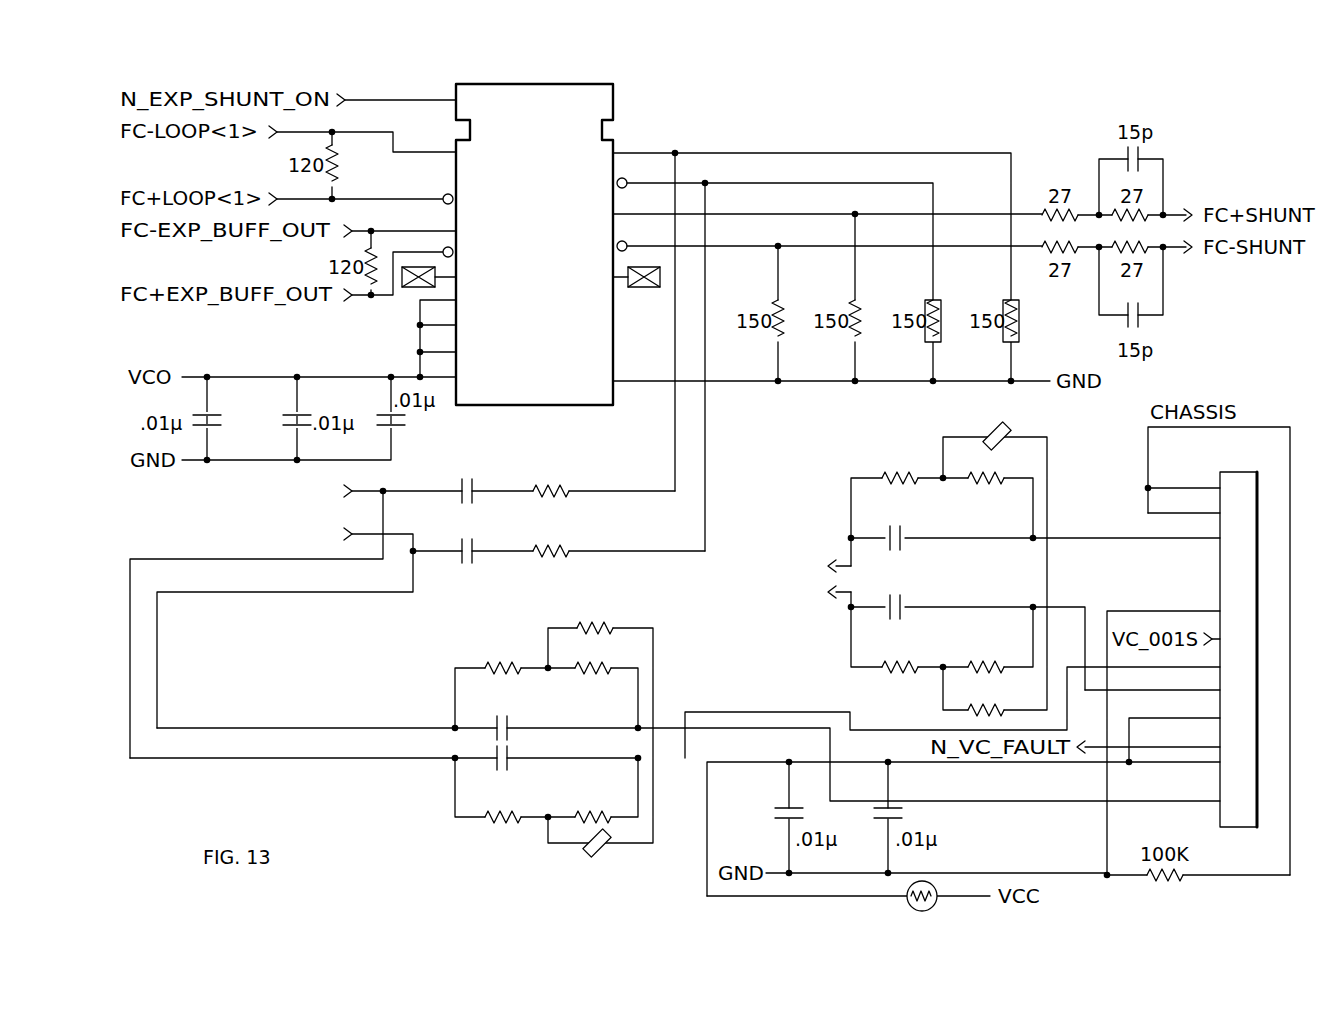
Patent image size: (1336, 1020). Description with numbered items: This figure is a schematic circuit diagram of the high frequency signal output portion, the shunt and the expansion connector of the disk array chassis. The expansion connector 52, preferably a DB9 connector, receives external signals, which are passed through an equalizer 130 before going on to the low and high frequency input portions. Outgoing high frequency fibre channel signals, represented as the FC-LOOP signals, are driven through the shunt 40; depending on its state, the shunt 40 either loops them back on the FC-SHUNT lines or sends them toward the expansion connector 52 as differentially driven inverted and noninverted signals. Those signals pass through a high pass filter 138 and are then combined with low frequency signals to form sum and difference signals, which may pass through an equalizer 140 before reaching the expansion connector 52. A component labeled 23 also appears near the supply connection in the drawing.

The shunt 40 is at (614, 126).
The high pass filter 138 is at (563, 453).
The equalizer 130 is at (1053, 712).
The equalizer 140 is at (662, 858).
The expansion connector 52 is at (1240, 472).
The VCC fuse/thermistor 23 is at (848, 893).